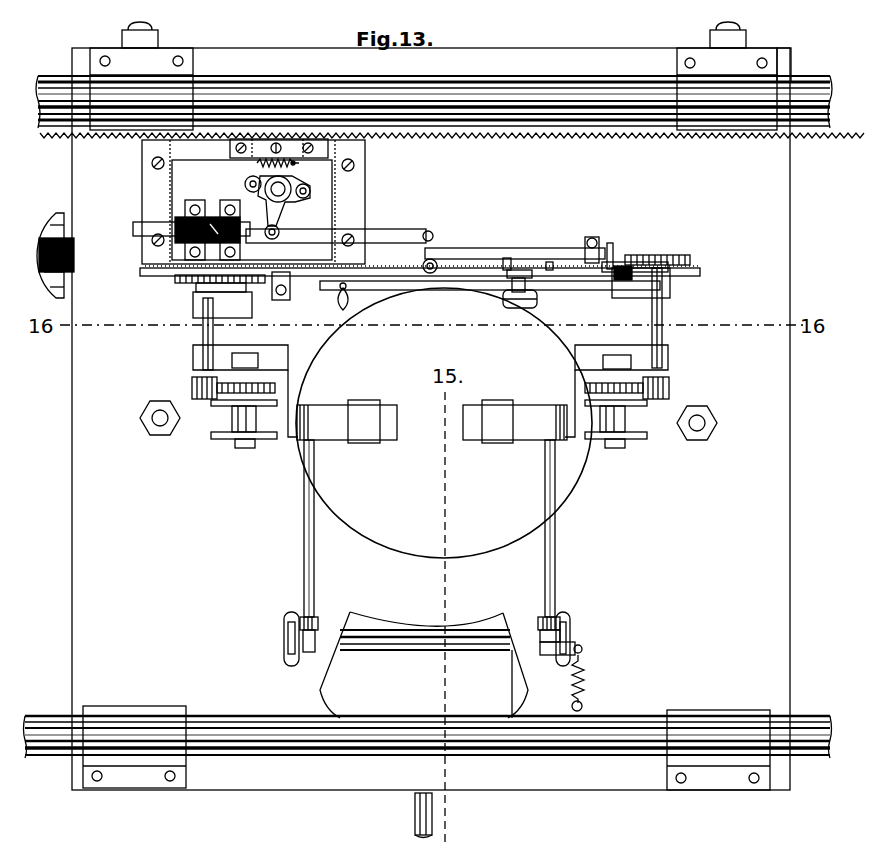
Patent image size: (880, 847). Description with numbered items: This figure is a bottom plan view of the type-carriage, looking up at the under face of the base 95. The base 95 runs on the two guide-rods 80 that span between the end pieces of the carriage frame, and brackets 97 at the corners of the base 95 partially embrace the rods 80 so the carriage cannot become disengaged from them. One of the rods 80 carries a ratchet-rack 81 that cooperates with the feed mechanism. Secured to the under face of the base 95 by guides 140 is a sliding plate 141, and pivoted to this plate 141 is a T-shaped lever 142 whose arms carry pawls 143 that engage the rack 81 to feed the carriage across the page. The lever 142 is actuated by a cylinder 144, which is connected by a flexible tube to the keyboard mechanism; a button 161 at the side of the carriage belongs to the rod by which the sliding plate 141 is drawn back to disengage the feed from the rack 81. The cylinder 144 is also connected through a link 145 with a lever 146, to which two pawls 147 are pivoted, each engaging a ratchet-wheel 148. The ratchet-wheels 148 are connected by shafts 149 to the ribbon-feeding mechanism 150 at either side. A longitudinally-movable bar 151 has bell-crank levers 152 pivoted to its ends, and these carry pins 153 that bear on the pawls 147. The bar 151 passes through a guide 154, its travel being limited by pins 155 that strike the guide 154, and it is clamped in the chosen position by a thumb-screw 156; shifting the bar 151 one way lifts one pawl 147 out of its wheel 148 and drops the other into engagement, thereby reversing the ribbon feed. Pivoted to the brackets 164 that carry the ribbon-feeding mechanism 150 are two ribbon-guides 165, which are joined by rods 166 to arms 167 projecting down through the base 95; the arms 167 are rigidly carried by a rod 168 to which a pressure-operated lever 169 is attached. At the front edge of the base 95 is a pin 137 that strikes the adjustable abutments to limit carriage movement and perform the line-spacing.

The guide-rods 80 is at (448, 96).
The ratchet-rack 81 is at (529, 128).
The base of the type-carriage 95 is at (431, 419).
The brackets 97 is at (163, 78).
The pin 137 is at (416, 812).
The guides 140 is at (150, 172).
The sliding plate 141 is at (182, 192).
The T-shaped lever 142 is at (270, 205).
The pawls 143 is at (309, 146).
The cylinder 144 is at (200, 238).
The link 145 is at (388, 242).
The lever 146 is at (432, 256).
The pawls 147 is at (503, 258).
The ratchet-wheels 148 is at (190, 280).
The shafts 149 is at (662, 322).
The ribbon-feeding mechanism 150 is at (192, 388).
The longitudinally-movable bar 151 is at (452, 292).
The bell-crank levers 152 is at (624, 286).
The pins 153 is at (608, 245).
The guide 154 is at (532, 292).
The pins 155 is at (520, 262).
The thumb-screw 156 is at (522, 314).
The button 161 is at (52, 251).
The brackets 164 is at (282, 436).
The ribbon-guides 165 is at (367, 438).
The rods 166 is at (305, 551).
The arms 167 is at (289, 629).
The rod 168 is at (378, 645).
The lever 169 is at (512, 669).